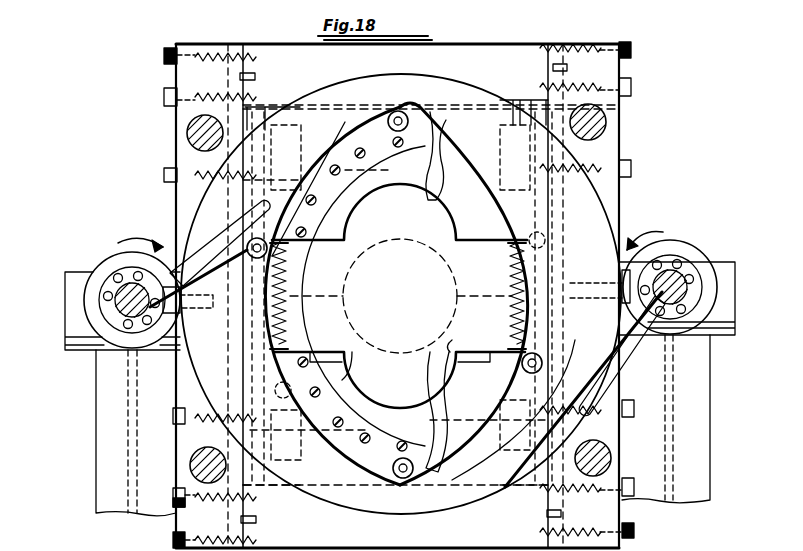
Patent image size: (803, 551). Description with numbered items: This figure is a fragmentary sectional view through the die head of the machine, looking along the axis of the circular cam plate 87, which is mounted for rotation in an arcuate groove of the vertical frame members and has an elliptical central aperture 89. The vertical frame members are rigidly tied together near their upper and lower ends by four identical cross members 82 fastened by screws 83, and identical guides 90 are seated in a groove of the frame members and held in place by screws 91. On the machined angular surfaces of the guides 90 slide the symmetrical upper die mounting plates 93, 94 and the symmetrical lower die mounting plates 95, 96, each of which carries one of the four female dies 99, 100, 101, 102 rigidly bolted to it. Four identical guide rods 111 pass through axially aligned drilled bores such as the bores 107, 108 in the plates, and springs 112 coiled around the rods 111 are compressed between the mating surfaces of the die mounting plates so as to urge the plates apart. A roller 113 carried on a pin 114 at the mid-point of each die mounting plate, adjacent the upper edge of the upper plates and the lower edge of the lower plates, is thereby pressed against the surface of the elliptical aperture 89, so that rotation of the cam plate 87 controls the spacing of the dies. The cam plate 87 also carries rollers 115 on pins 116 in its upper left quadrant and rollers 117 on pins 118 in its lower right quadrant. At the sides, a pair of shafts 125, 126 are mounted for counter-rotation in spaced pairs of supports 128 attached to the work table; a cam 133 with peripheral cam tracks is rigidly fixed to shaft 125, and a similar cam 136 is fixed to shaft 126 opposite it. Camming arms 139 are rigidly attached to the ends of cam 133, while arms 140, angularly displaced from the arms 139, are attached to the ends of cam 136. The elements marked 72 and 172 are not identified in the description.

The cross member 82 is at (500, 44).
The screw 83 is at (166, 97).
The guide posts 72 is at (187, 133).
The screw 91 is at (165, 176).
The roller 113 is at (379, 104).
The pin 114 is at (402, 111).
The elliptical central aperture 89 is at (436, 108).
The drilled bore 107 is at (293, 150).
The upper die mounting plate 93 is at (347, 144).
The female die 99 is at (358, 200).
The upper die mounting plate 94 is at (427, 175).
The female die 100 is at (452, 212).
The camming arm 139 is at (227, 231).
The roller 115 is at (246, 247).
The pin 116 is at (250, 263).
The spring 112 is at (290, 245).
The guide rod 111 is at (290, 268).
The bracket 172 is at (184, 309).
The shaft 125 is at (131, 283).
The support 128 is at (65, 291).
The cam 133 is at (72, 320).
The cam 136 is at (699, 231).
The shaft 126 is at (687, 276).
The female die 102 is at (453, 352).
The female die 101 is at (352, 371).
The lower die mounting plate 96 is at (432, 406).
The roller 117 is at (523, 351).
The pin 118 is at (543, 365).
The arm 140 is at (630, 350).
The drilled bore 108 is at (291, 440).
The lower die mounting plate 95 is at (373, 458).
The guide 90 is at (281, 487).
The circular cam plate 87 is at (477, 487).